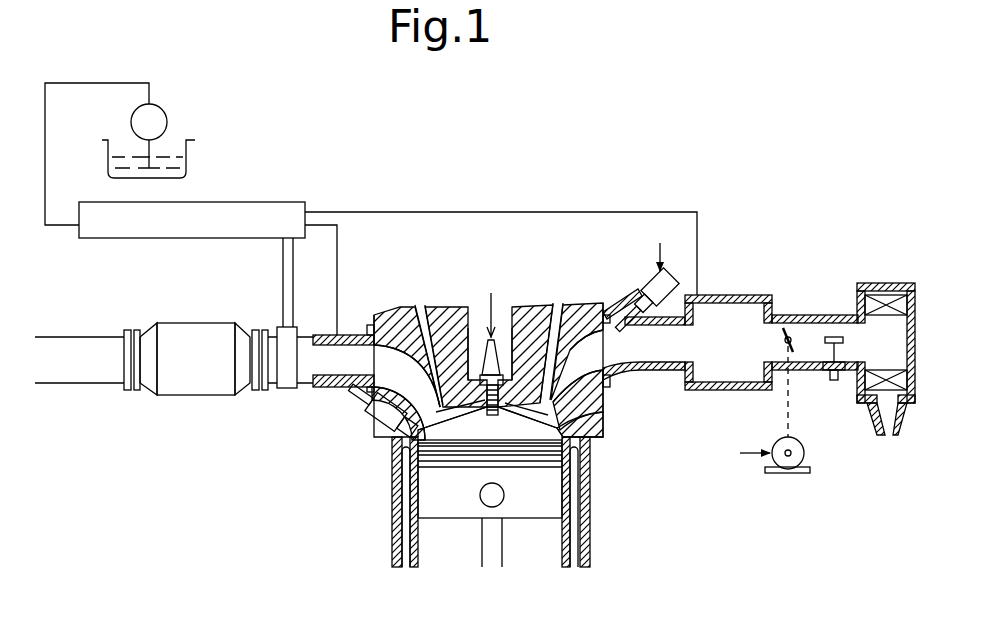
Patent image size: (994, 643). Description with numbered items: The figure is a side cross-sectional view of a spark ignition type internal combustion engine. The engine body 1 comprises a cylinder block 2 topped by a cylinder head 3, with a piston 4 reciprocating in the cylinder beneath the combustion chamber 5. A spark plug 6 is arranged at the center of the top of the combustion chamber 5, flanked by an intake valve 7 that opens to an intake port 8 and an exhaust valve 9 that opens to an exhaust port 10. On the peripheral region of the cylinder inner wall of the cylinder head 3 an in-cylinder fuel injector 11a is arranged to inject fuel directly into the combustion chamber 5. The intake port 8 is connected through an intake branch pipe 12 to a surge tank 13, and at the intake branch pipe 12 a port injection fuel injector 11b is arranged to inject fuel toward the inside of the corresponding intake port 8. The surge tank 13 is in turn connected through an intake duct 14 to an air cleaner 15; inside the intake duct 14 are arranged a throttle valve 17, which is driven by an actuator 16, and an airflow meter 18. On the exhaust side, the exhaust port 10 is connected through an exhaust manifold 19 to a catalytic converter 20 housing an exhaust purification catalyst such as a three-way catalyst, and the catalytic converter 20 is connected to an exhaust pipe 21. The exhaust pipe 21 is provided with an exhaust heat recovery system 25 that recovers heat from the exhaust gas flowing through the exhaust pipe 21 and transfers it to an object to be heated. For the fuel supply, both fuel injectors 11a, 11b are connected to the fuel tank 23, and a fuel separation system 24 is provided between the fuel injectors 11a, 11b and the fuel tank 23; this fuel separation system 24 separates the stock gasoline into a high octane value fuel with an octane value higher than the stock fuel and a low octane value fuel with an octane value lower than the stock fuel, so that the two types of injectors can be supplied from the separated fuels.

The engine body 1 is at (626, 468).
The cylinder block 2 is at (590, 548).
The cylinder head 3 is at (605, 430).
The piston 4 is at (430, 492).
The combustion chamber 5 is at (465, 430).
The spark plug 6 is at (487, 358).
The intake valve 7 is at (605, 418).
The intake port 8 is at (608, 383).
The exhaust valve 9 is at (432, 318).
The exhaust port 10 is at (405, 357).
The in-cylinder fuel injector 11a is at (367, 421).
The port injection fuel injector 11b is at (643, 287).
The intake branch pipe 12 is at (672, 298).
The surge tank 13 is at (745, 296).
The intake duct 14 is at (815, 315).
The air cleaner 15 is at (885, 283).
The actuator 16 is at (780, 442).
The throttle valve 17 is at (795, 352).
The airflow meter 18 is at (836, 337).
The exhaust manifold 19 is at (352, 337).
The catalytic converter 20 is at (197, 323).
The exhaust pipe 21 is at (77, 372).
The fuel tank 23 is at (172, 152).
The fuel separation system 24 is at (256, 199).
The exhaust heat recovery system 25 is at (276, 283).